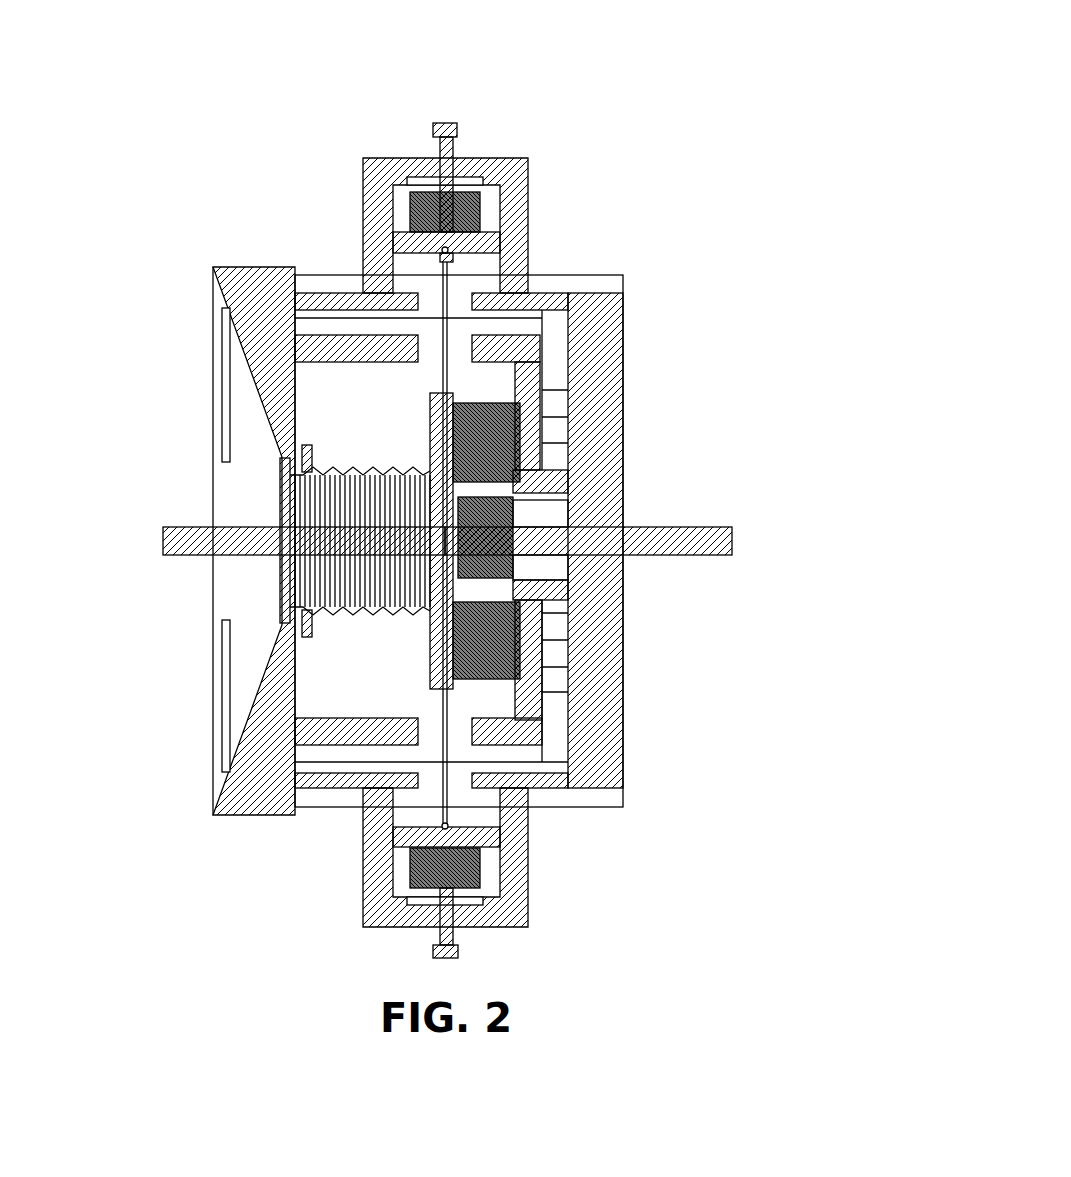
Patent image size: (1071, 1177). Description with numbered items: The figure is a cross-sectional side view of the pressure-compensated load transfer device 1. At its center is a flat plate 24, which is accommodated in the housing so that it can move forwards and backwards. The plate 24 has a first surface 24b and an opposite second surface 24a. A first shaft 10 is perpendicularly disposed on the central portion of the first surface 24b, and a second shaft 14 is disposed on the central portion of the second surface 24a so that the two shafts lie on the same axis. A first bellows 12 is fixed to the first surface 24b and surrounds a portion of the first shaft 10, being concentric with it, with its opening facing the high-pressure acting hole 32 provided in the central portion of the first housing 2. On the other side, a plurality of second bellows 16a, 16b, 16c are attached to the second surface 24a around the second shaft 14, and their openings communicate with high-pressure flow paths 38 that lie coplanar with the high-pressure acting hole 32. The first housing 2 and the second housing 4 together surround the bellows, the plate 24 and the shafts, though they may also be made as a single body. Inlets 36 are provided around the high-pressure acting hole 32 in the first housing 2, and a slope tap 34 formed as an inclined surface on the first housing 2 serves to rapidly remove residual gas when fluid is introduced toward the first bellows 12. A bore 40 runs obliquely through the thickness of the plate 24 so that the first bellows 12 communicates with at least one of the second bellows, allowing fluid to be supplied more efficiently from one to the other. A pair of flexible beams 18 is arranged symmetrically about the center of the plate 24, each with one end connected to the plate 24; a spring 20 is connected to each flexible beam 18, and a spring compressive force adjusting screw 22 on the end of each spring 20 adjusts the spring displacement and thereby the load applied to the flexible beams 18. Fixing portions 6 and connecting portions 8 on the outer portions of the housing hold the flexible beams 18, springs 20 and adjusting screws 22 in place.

The pressure-compensated load transfer device 1 is at (640, 172).
The first housing 2 is at (247, 818).
The second housing 4 is at (597, 740).
The fixing portion 6 is at (380, 183).
The connecting portion 8 is at (390, 240).
The first shaft 10 is at (162, 540).
The first bellows 12 is at (290, 565).
The second shaft 14 is at (735, 540).
The second bellows 16a is at (513, 653).
The second bellows 16b is at (513, 515).
The second bellows 16c is at (522, 403).
The flexible beam 18 is at (445, 303).
The spring 20 is at (480, 207).
The spring compressive force adjusting screw 22 is at (457, 128).
The plate 24 is at (463, 493).
The second surface 24a is at (513, 393).
The first surface 24b is at (430, 400).
The high-pressure acting hole 32 is at (275, 490).
The slope tap 34 is at (240, 702).
The inlet 36 is at (223, 375).
The high-pressure flow path 38 is at (548, 763).
The bore 40 is at (460, 598).